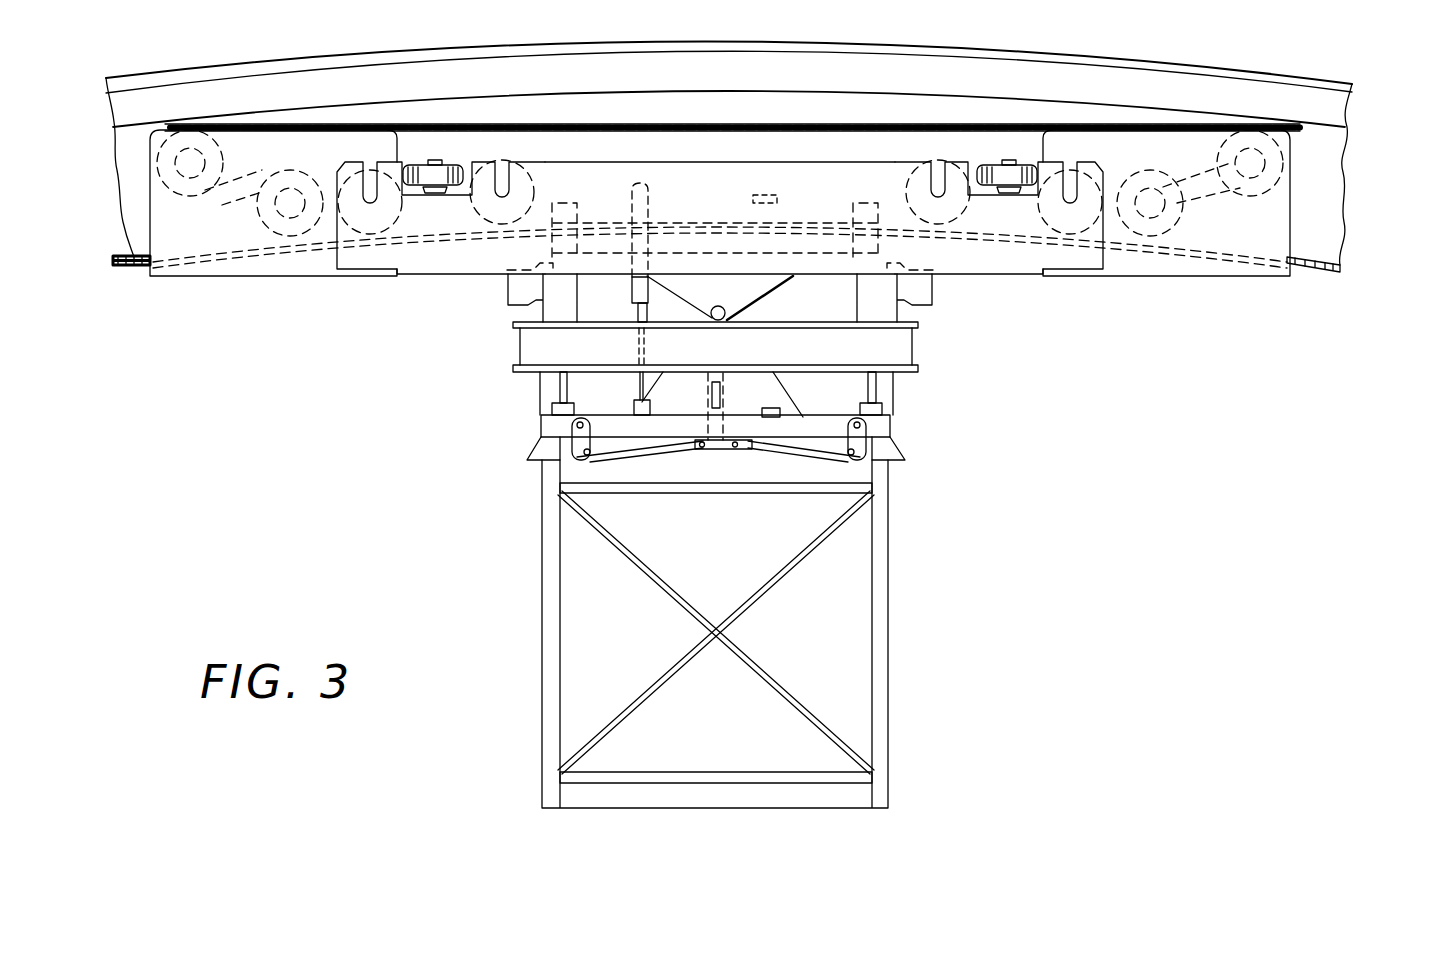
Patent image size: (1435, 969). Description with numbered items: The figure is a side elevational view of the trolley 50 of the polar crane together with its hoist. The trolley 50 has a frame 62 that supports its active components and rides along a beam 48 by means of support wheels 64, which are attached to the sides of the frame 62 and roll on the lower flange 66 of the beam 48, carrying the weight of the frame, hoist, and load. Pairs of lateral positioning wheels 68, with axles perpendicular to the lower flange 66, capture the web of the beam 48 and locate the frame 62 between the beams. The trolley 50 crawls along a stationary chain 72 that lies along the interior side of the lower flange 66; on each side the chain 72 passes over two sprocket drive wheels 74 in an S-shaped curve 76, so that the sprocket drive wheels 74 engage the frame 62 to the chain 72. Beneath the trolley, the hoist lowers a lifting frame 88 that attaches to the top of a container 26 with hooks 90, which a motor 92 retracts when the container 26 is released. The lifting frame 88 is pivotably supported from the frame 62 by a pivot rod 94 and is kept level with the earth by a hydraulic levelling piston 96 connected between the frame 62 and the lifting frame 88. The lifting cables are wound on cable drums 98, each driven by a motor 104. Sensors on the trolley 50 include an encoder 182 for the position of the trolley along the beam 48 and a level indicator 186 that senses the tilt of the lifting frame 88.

The container 26 is at (889, 608).
The beam 48 is at (1328, 233).
The trolley 50 is at (1145, 292).
The frame 62 is at (605, 172).
The support wheel 64 is at (475, 218).
The lower flange 66 is at (992, 238).
The lateral positioning wheel 68 is at (455, 164).
The stationary chain 72 is at (360, 124).
The sprocket drive wheel 74 is at (262, 208).
The S-shaped curve 76 is at (248, 155).
The lifting frame 88 is at (719, 450).
The hook 90 is at (880, 474).
The motor 92 is at (727, 392).
The pivot rod 94 is at (706, 308).
The actuator cylinder 96 is at (637, 386).
The cable drum 98 is at (703, 250).
The motor 104 is at (917, 309).
The encoder 182 is at (780, 199).
The level indicator 186 is at (781, 408).